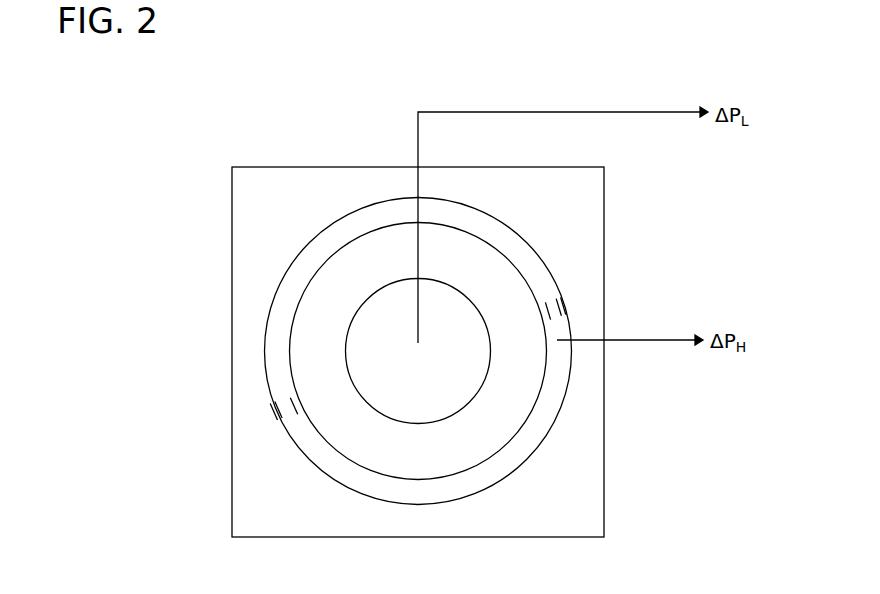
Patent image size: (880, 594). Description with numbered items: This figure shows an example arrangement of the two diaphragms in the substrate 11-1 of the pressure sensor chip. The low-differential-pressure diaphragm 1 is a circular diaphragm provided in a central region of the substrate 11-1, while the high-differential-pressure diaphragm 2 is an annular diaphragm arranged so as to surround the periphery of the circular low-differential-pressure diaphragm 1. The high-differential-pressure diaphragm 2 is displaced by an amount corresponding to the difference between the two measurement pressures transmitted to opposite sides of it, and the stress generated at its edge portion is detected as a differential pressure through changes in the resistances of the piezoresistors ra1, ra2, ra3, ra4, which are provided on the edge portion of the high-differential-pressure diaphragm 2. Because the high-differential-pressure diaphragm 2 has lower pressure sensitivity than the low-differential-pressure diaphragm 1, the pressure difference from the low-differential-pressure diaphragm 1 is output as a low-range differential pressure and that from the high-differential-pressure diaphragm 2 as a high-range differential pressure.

The low-differential-pressure diaphragm 1 is at (385, 352).
The high-differential-pressure diaphragm 2 is at (355, 212).
The substrate 11-1 is at (604, 245).
The piezoresistor ra1 is at (280, 413).
The piezoresistor ra2 is at (295, 404).
The piezoresistor ra3 is at (547, 311).
The piezoresistor ra4 is at (564, 307).